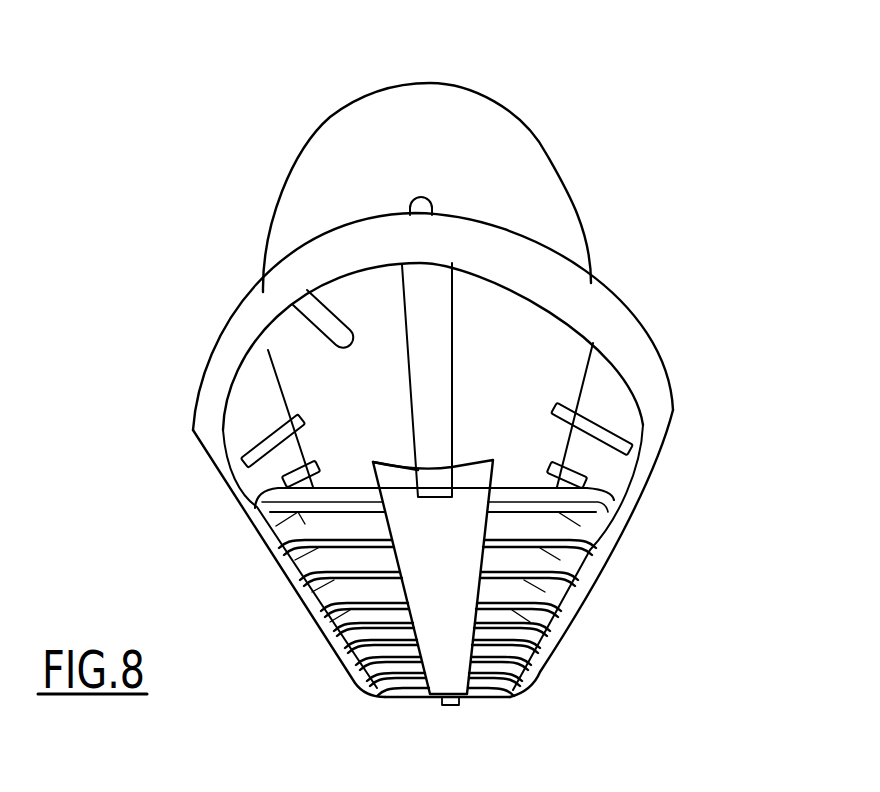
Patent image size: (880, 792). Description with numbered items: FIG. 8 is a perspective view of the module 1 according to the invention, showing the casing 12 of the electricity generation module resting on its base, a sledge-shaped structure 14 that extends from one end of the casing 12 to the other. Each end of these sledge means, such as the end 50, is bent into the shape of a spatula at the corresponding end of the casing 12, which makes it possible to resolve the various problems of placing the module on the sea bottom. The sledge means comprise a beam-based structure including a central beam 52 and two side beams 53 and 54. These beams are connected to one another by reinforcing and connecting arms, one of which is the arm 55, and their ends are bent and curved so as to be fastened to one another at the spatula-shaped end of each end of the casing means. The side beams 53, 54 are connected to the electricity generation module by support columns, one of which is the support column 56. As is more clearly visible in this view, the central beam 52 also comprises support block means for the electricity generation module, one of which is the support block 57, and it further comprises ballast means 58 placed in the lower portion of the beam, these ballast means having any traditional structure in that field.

The device 1 is at (327, 115).
The casing 12 is at (320, 201).
The basket 14 is at (675, 465).
The end of the sledge means 50 is at (620, 290).
The central beam 52 is at (353, 666).
The side beam 53 is at (625, 536).
The side beam 54 is at (260, 571).
The reinforcing and connecting arm 55 is at (612, 499).
The support column 56 is at (605, 413).
The support block means 57 is at (380, 463).
The ballast means 58 is at (421, 577).